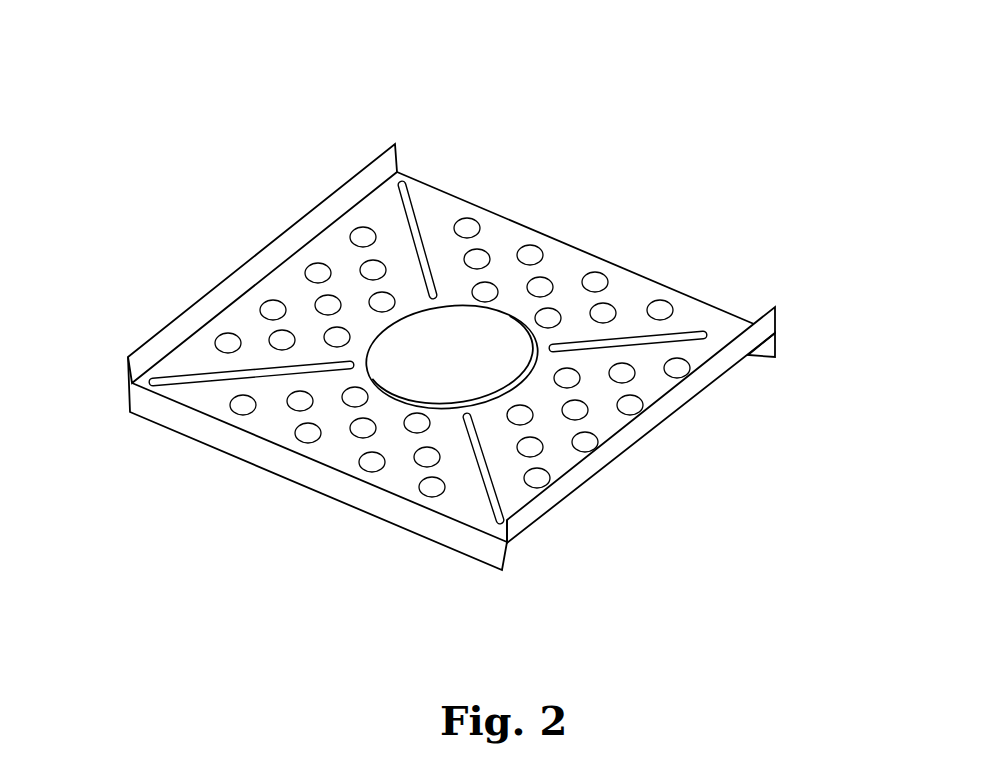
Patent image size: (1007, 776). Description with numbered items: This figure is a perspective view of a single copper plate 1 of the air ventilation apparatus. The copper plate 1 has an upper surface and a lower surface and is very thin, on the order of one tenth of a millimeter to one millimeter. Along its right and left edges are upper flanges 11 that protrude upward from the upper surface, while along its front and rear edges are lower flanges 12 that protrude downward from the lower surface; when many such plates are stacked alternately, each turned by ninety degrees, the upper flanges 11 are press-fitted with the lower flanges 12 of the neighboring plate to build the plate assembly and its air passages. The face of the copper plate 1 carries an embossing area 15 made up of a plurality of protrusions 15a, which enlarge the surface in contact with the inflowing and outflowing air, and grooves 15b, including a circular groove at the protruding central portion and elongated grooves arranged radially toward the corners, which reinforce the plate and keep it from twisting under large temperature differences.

The copper plate 1 is at (566, 194).
The upper flange 11 is at (398, 153).
The lower flange 12 is at (758, 360).
The openings 15 is at (125, 178).
The protrusion 15a is at (273, 310).
The groove 15b is at (200, 370).